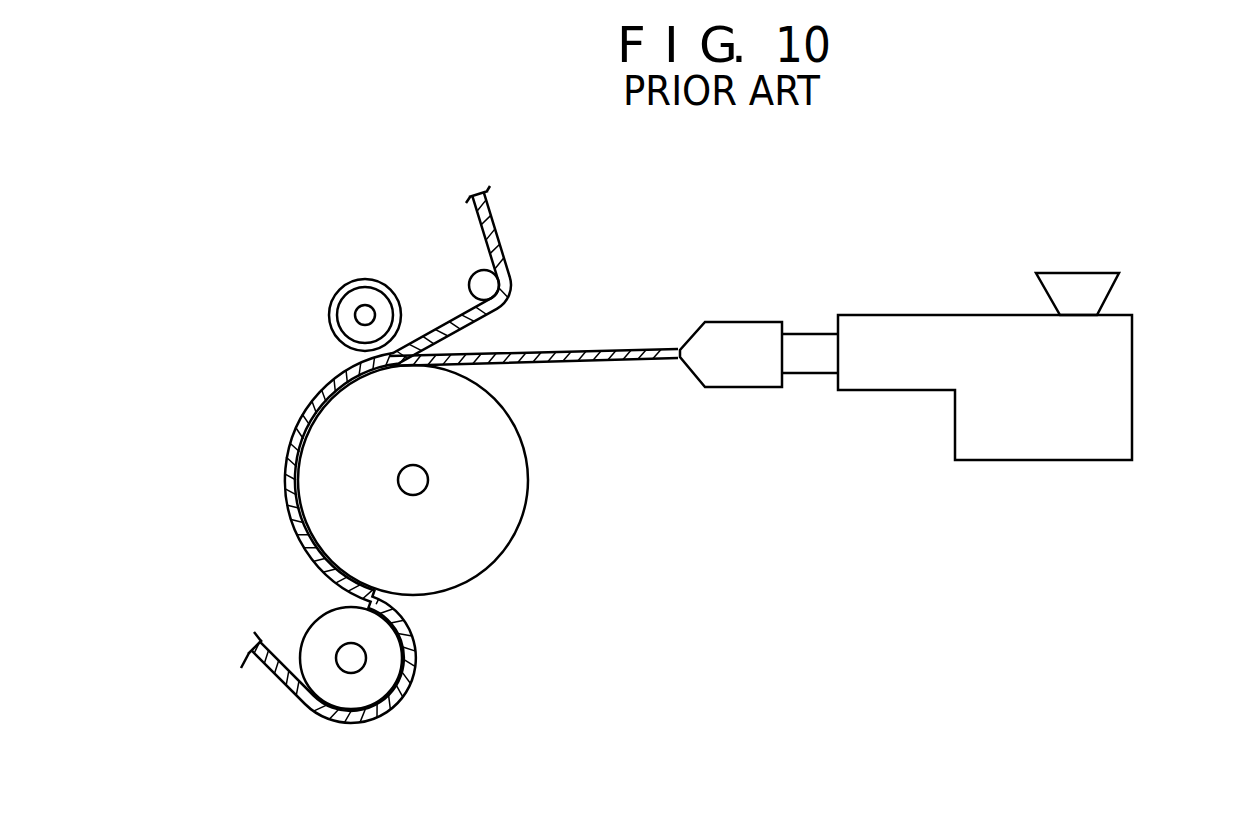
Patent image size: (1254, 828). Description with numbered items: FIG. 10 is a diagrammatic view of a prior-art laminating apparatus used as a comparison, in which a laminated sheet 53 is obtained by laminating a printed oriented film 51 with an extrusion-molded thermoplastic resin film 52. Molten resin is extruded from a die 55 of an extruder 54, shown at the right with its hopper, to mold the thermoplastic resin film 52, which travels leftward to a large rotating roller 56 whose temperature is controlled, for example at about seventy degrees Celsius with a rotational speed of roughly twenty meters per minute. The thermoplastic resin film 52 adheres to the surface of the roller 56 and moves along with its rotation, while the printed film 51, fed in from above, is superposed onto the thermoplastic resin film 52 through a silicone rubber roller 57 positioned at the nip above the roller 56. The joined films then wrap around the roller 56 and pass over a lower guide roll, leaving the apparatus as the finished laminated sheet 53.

The printed oriented film 51 is at (495, 227).
The thermoplastic resin film 52 is at (593, 348).
The laminated sheet 53 is at (257, 680).
The extruder 54 is at (1113, 388).
The die 55 is at (743, 333).
The roller 56 is at (512, 495).
The silicone rubber roller 57 is at (330, 304).